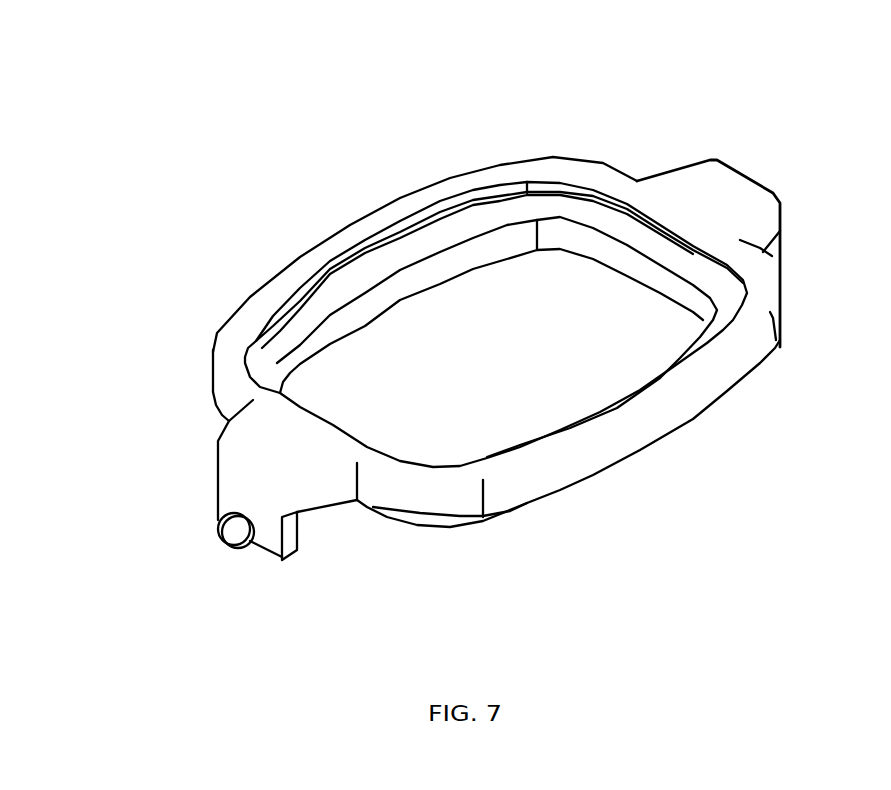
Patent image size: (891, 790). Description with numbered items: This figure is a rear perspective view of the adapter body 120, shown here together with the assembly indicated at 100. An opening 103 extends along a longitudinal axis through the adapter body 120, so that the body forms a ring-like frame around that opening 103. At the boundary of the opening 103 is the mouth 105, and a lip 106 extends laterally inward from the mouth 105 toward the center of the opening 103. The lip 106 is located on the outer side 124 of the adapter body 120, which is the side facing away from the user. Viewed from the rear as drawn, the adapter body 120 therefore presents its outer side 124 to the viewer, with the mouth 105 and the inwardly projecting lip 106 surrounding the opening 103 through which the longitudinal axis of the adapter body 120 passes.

The frame 100 is at (472, 292).
The opening 103 is at (568, 327).
The mouth 105 is at (395, 265).
The lip 106 is at (515, 170).
The adapter body 120 is at (640, 432).
The outer side 124 is at (748, 330).